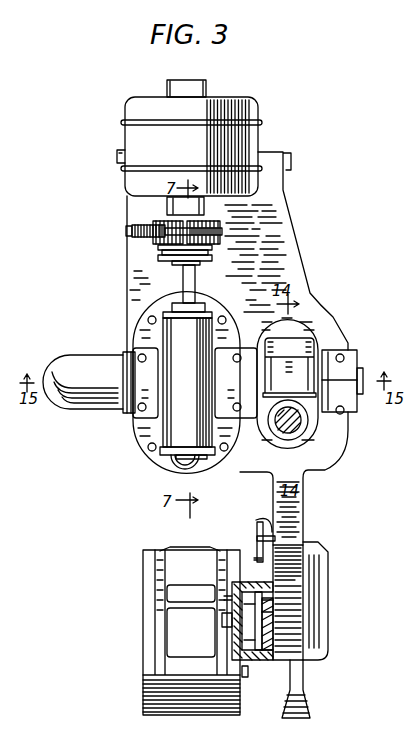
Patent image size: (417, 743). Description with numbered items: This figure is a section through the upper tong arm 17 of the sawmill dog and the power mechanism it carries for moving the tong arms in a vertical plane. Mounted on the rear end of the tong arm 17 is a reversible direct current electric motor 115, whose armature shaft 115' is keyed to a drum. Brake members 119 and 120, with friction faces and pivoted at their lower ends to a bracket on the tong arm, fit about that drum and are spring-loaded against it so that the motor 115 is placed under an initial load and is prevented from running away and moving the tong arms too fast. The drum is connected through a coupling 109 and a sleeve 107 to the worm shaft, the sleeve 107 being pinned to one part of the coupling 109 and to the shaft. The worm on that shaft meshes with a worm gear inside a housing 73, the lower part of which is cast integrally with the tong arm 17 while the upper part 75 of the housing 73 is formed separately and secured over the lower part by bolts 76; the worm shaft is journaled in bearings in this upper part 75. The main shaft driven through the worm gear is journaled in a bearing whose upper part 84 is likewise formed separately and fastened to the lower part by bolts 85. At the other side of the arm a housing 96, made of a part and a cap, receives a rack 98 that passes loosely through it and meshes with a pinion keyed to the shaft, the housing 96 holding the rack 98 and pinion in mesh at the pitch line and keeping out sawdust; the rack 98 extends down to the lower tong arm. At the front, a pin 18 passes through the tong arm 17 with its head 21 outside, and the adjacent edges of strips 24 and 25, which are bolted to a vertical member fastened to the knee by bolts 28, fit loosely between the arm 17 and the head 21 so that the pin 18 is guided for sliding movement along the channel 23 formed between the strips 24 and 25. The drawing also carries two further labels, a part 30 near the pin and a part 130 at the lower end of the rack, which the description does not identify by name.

The electric motor 115 is at (172, 138).
The armature shaft 115' is at (167, 206).
The brake member 119 is at (160, 224).
The brake member 120 is at (222, 233).
The coupling 109 is at (170, 252).
The sleeve 107 is at (185, 281).
The upper tong arm 17 is at (128, 270).
The bolts 76 is at (149, 320).
The upper part of housing 75 is at (172, 352).
The housing 73 is at (76, 404).
The housing 96 is at (290, 362).
The bolts 85 is at (344, 358).
The upper part of bearing 84 is at (352, 378).
The rack 98 is at (297, 426).
The spring 30 is at (262, 516).
The head 21 is at (257, 545).
The bolts 28 is at (248, 602).
The strip 25 is at (270, 590).
The channel 23 is at (270, 619).
The strip 24 is at (266, 652).
The pin 18 is at (312, 655).
The handle 130 is at (309, 702).